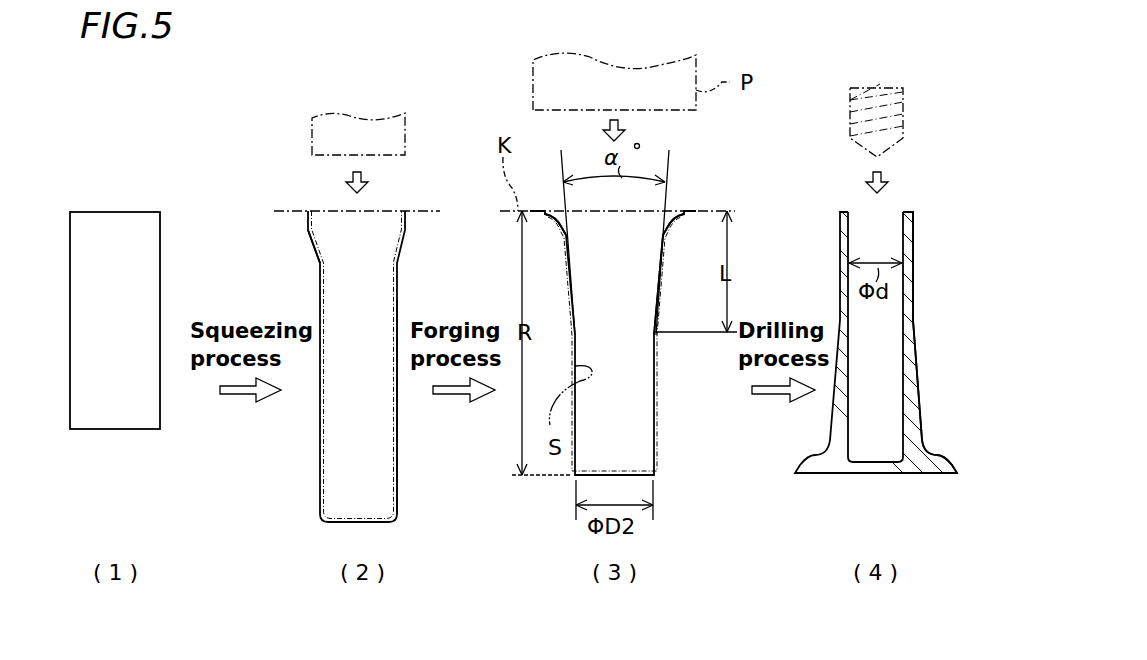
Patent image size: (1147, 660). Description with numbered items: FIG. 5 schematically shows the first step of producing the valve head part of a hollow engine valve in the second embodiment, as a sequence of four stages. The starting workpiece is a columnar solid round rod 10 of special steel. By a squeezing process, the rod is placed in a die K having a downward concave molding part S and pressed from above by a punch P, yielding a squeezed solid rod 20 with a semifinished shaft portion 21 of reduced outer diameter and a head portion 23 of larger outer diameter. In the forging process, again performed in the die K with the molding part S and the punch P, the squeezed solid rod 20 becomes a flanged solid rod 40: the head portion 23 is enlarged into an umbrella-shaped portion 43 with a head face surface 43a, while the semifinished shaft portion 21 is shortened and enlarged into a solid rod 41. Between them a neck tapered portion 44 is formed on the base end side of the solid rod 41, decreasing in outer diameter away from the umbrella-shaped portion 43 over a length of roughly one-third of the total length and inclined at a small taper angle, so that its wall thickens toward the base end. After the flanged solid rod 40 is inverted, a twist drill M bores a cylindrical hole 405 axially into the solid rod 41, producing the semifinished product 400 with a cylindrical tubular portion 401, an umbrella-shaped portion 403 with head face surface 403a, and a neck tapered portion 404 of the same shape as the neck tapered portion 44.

The solid round rod 10 is at (162, 302).
The squeezed solid rod 20 is at (399, 303).
The semifinished shaft portion 21 is at (395, 432).
The head portion 23 is at (318, 252).
The flanged solid rod 40 is at (656, 393).
The solid rod 41 is at (656, 442).
The umbrella-shaped portion 43 is at (557, 232).
The head face surface 43a is at (672, 213).
The neck tapered portion 44 is at (658, 262).
The semifinished product 400 is at (916, 242).
The tubular portion 401 is at (911, 287).
The umbrella-shaped portion 403 is at (930, 456).
The head face surface 403a is at (905, 475).
The neck tapered portion 404 is at (918, 381).
The cylindrical hole 405 is at (851, 226).
The punch P is at (405, 140).
The die K is at (300, 211).
The molding part S is at (322, 428).
The twist drill M is at (903, 110).